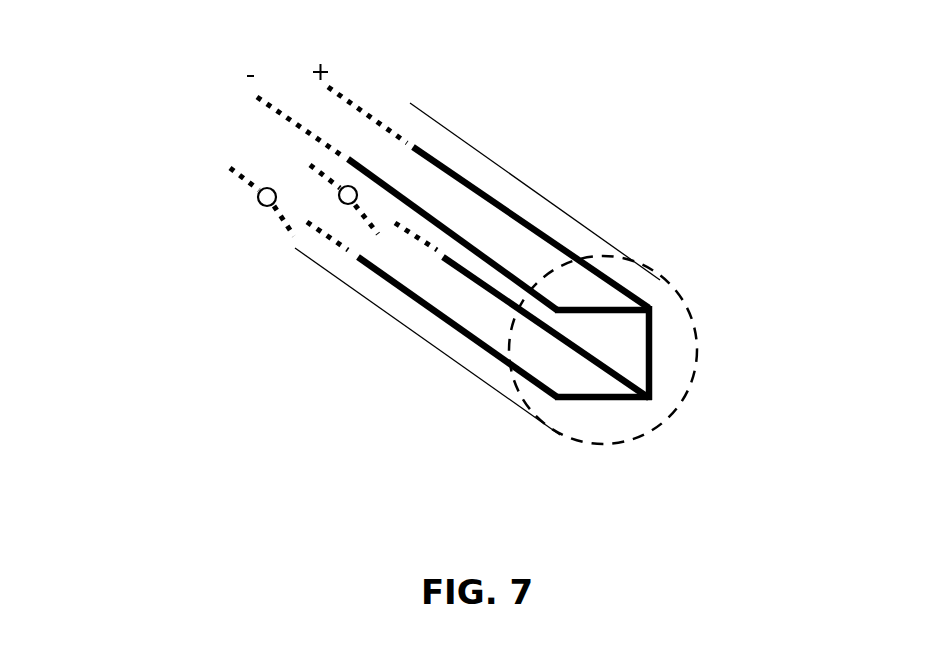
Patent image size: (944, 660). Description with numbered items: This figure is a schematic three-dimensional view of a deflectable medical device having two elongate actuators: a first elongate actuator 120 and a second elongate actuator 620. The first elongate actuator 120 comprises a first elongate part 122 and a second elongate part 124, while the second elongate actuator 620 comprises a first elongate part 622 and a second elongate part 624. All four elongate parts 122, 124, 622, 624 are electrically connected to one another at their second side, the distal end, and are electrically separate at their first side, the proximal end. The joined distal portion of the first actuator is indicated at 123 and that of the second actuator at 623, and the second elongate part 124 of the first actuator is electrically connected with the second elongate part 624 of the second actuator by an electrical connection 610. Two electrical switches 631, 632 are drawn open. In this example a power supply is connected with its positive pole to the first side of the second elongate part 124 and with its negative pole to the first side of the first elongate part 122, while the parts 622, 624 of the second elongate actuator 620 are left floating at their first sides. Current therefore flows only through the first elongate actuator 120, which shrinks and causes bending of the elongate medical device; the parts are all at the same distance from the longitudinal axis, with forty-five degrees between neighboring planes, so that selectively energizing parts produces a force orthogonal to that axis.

The first elongate actuator 120 is at (507, 93).
The first elongate part 122 is at (443, 222).
The second elongate part 124 is at (527, 220).
The first connecting portion 123 is at (612, 309).
The electrical connection 610 is at (653, 349).
The second elongate actuator 620 is at (248, 475).
The first elongate part 622 is at (497, 298).
The second elongate part 624 is at (402, 297).
The second connecting portion 623 is at (615, 399).
The electrical switch 631 is at (360, 217).
The electrical switch 632 is at (288, 234).